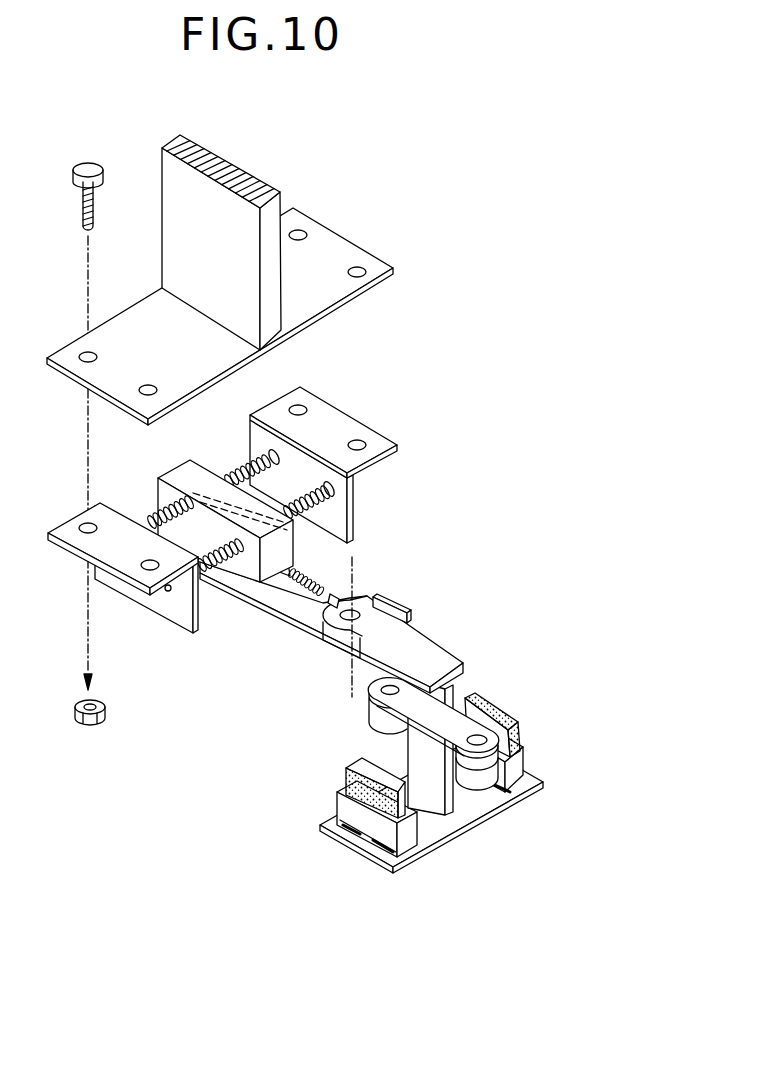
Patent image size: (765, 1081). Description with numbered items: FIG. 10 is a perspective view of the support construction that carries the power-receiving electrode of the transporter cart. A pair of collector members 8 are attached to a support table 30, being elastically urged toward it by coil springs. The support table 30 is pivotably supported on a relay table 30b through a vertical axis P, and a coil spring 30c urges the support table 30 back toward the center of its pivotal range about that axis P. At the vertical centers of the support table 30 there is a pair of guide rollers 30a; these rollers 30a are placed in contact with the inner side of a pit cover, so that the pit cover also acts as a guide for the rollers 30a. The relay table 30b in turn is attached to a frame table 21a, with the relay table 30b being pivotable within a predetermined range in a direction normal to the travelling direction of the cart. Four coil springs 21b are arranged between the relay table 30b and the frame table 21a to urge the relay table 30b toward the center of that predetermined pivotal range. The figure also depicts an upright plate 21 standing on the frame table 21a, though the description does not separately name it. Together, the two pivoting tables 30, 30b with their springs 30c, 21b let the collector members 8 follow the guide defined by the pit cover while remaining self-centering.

The vertical guide plate 21 is at (287, 205).
The frame table 21a is at (395, 262).
The coil springs 21b is at (158, 484).
The support table 30 is at (460, 837).
The guide rollers 30a is at (360, 717).
The relay table 30b is at (367, 596).
The coil spring 30c is at (305, 590).
The collector members 8 is at (507, 705).
The vertical axis P is at (350, 692).